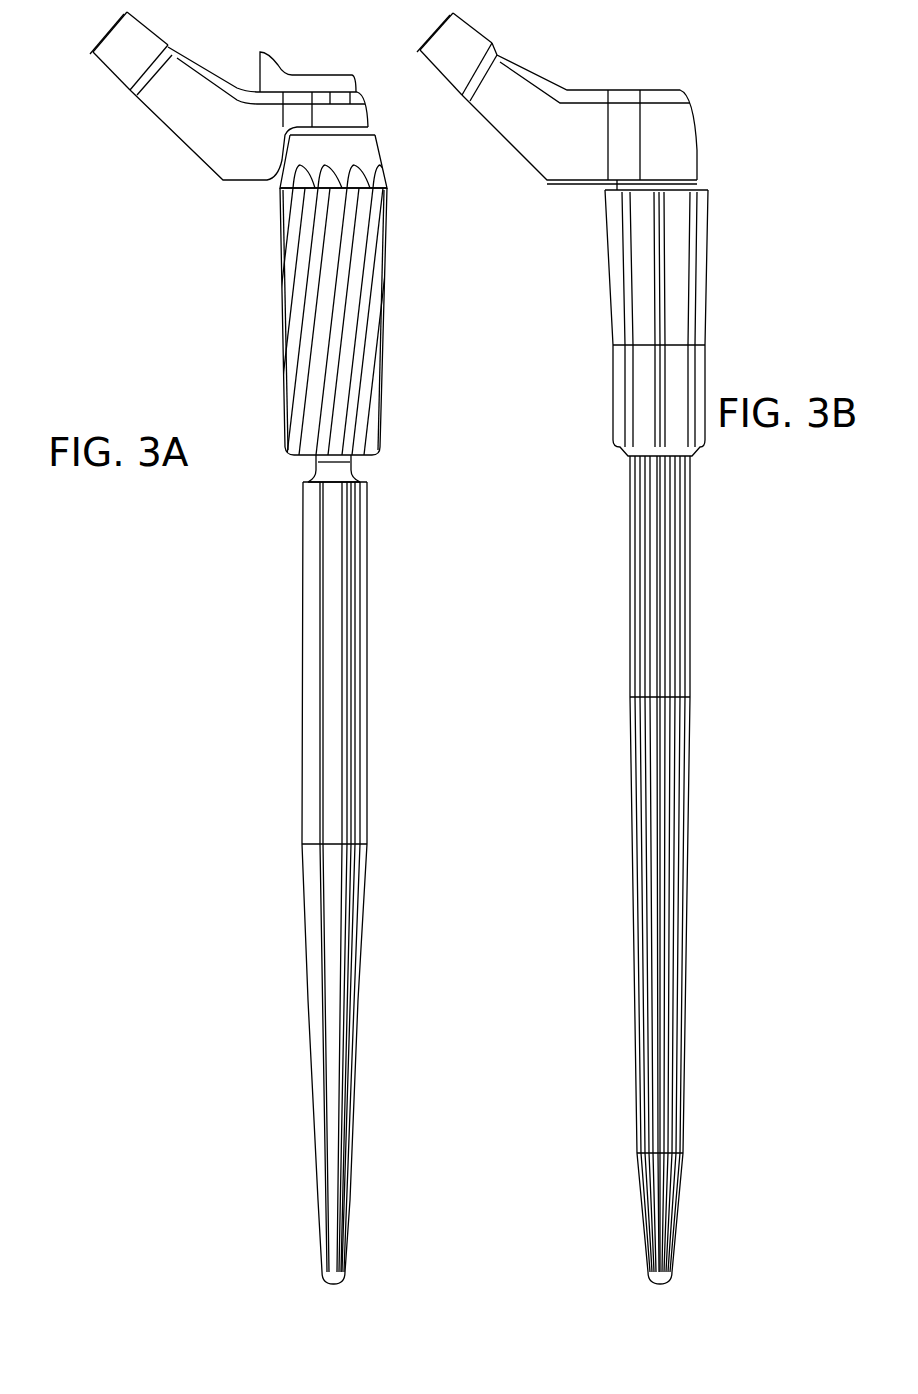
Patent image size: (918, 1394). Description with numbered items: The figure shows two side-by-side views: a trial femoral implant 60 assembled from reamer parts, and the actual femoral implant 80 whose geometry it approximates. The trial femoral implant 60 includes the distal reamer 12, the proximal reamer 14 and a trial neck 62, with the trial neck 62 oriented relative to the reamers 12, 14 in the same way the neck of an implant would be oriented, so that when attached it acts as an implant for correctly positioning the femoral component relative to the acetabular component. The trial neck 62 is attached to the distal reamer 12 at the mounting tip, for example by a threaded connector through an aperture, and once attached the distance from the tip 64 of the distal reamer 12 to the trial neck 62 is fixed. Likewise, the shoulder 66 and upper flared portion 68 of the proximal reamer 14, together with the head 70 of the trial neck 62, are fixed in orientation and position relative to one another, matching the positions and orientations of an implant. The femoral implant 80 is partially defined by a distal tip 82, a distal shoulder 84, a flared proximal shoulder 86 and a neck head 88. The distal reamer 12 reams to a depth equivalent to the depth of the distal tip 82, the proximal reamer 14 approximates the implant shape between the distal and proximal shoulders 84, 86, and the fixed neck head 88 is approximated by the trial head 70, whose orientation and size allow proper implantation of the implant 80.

In FIG. 3A, the distal reamer 12 is at (252, 612).
In FIG. 3A, the proximal reamer 14 is at (237, 307).
In FIG. 3A, the trial femoral implant 60 is at (205, 522).
In FIG. 3A, the trial neck 62 is at (180, 162).
In FIG. 3A, the tip 64 is at (328, 1285).
In FIG. 3A, the shoulder 66 is at (363, 452).
In FIG. 3A, the upper flared portion 68 is at (393, 174).
In FIG. 3A, the head 70 is at (108, 30).
In FIG. 3B, the femoral implant 80 is at (773, 307).
In FIG. 3B, the distal tip 82 is at (648, 1277).
In FIG. 3B, the distal shoulder 84 is at (690, 456).
In FIG. 3B, the flared proximal shoulder 86 is at (705, 192).
In FIG. 3B, the neck head 88 is at (423, 48).